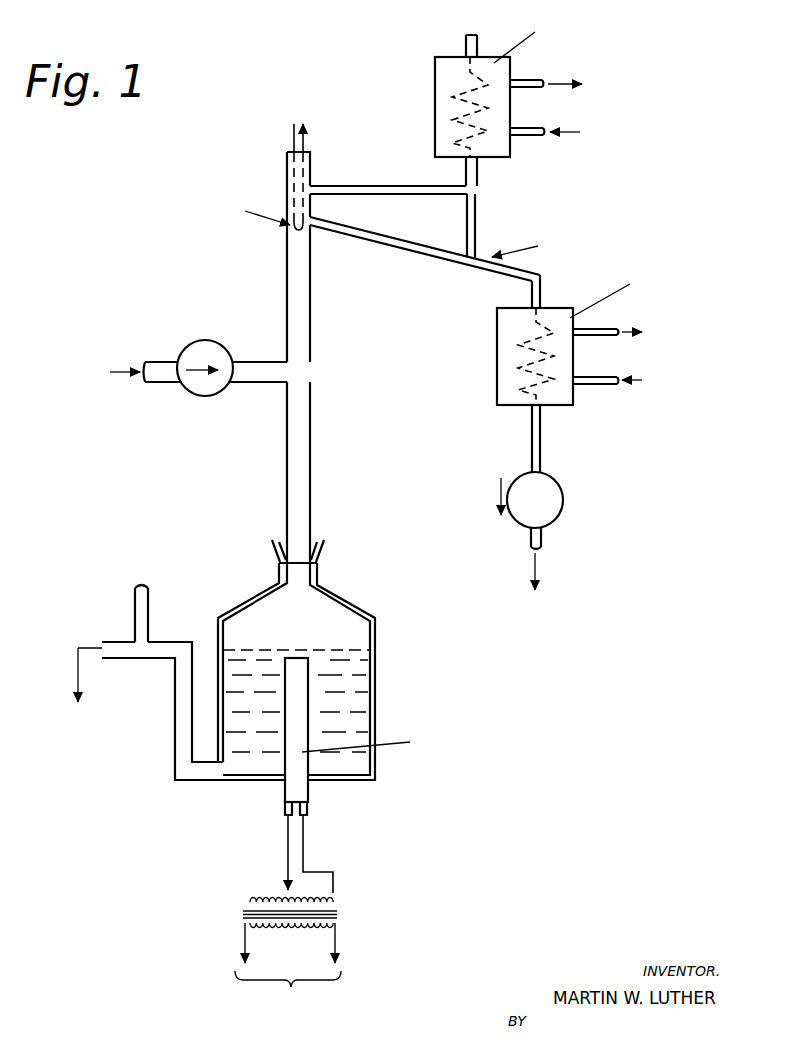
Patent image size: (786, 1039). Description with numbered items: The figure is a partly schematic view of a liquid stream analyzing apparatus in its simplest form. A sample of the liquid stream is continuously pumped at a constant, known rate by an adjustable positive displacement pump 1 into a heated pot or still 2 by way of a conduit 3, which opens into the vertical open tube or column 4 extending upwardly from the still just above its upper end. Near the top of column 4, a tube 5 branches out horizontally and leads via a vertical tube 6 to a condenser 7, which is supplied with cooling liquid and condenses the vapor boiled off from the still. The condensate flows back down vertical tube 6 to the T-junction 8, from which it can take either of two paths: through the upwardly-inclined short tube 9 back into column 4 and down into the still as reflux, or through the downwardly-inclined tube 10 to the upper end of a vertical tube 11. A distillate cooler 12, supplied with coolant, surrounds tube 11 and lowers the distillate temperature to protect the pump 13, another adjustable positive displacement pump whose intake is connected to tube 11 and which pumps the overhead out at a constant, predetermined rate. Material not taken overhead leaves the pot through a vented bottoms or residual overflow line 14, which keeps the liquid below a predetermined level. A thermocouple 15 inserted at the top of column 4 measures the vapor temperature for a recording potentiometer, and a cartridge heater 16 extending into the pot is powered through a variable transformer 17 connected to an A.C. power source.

The adjustable positive displacement pump 1 is at (192, 350).
The still 2 is at (376, 651).
The conduit 3 is at (258, 376).
The column 4 is at (312, 378).
The tube 5 is at (362, 192).
The vertical tube 6 is at (477, 212).
The condenser 7 is at (447, 67).
The T-junction 8 is at (521, 241).
The upwardly-inclined short tube 9 is at (415, 245).
The downwardly-inclined tube 10 is at (527, 281).
The vertical tube 11 is at (542, 300).
The distillate cooler 12 is at (510, 328).
The pump 13 is at (548, 490).
The bottoms or residual overflow line 14 is at (170, 647).
The thermocouple 15 is at (299, 231).
The cartridge heater 16 is at (302, 694).
The variable transformer 17 is at (338, 914).